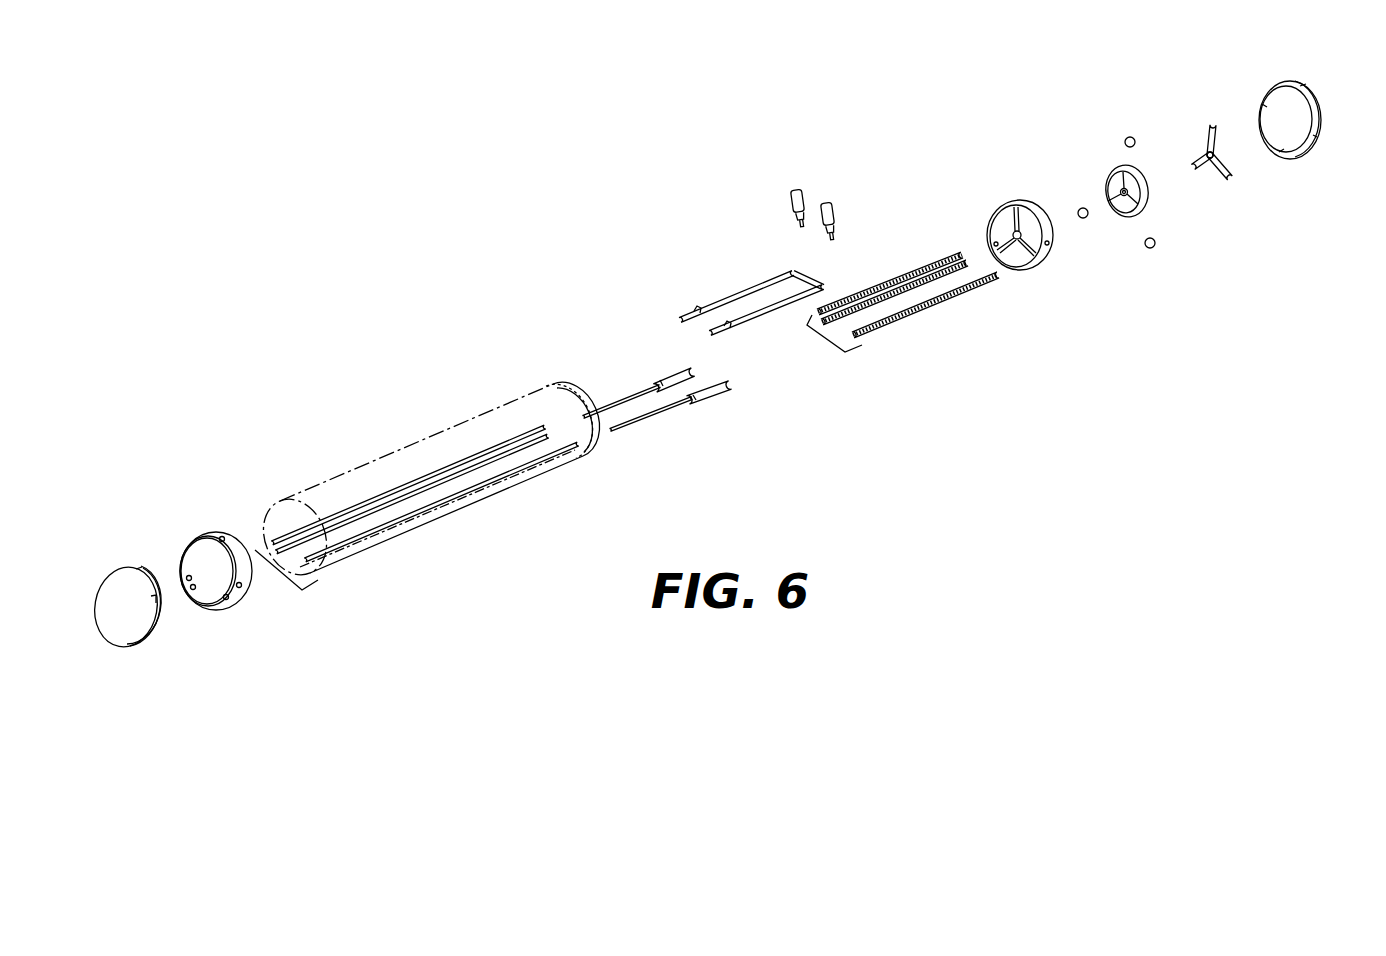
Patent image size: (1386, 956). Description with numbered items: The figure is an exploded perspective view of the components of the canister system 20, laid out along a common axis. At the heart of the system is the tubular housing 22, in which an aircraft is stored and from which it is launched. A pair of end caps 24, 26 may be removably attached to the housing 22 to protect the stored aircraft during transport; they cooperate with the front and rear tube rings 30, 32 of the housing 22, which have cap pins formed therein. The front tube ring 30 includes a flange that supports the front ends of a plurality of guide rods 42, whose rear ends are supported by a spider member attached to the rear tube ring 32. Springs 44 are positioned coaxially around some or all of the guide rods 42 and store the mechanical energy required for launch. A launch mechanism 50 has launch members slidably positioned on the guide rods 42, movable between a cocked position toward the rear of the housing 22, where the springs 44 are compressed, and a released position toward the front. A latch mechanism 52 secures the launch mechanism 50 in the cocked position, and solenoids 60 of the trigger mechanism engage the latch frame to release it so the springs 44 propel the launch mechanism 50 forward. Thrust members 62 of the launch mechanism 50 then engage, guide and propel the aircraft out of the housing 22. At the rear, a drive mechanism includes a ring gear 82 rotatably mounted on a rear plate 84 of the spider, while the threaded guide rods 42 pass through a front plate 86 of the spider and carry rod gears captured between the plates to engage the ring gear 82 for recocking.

The canister system 20 is at (513, 153).
The tubular housing 22 is at (517, 397).
The end cap 24 is at (142, 643).
The end cap 26 is at (1323, 114).
The front tube ring 30 is at (237, 600).
The rear tube ring 32 is at (1015, 238).
The guide rods 42 is at (275, 572).
The springs 44 is at (827, 337).
The launch mechanism 50 is at (716, 377).
The latch mechanism 52 is at (720, 294).
The solenoids 60 is at (827, 200).
The thrust members 62 is at (663, 372).
The ring gear 82 is at (1142, 213).
The rear plate 84 is at (1230, 183).
The front plate 86 is at (1025, 270).